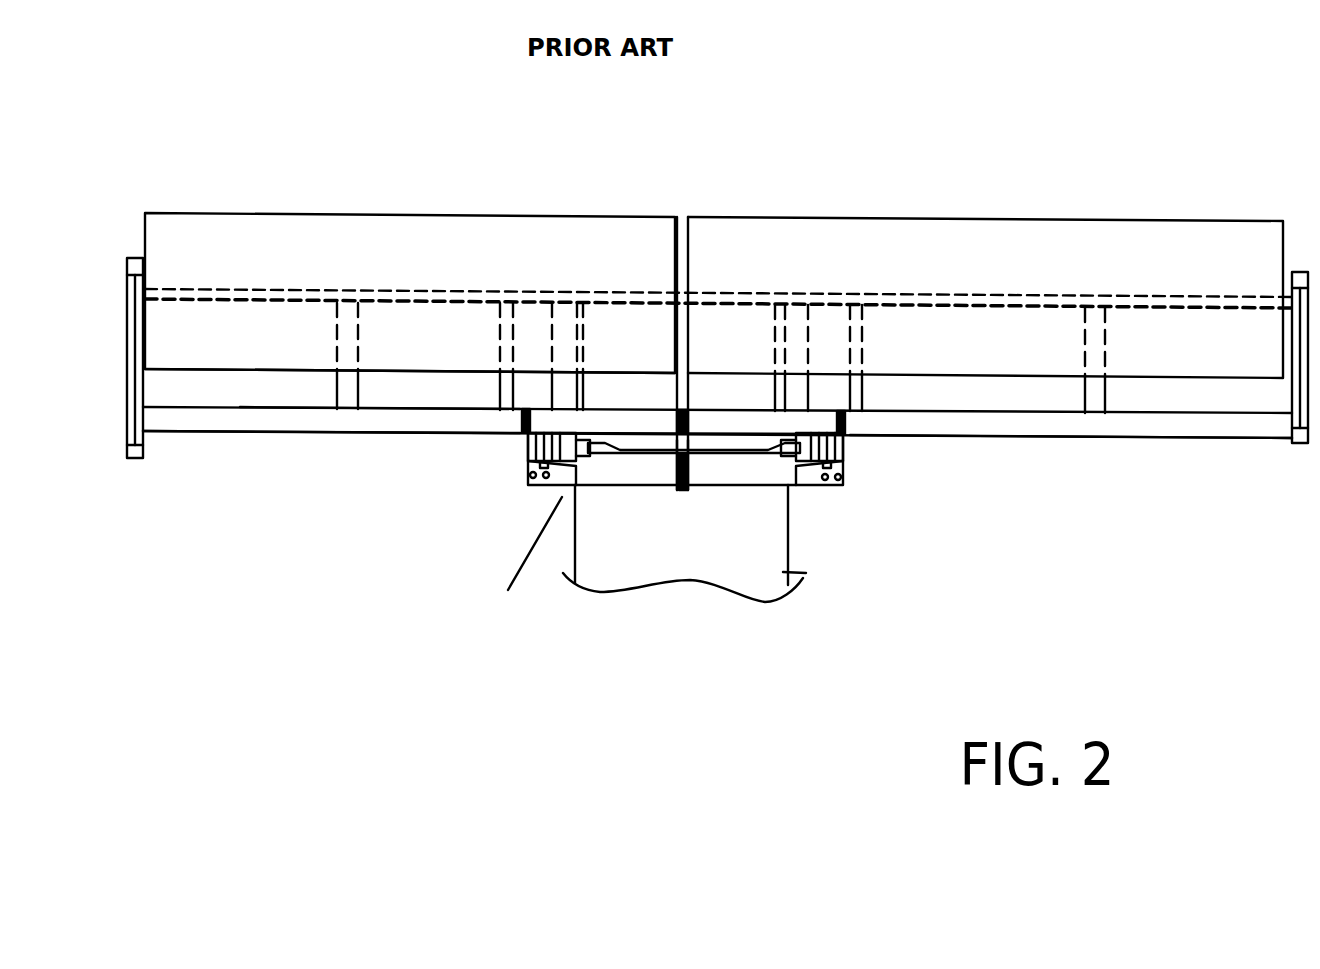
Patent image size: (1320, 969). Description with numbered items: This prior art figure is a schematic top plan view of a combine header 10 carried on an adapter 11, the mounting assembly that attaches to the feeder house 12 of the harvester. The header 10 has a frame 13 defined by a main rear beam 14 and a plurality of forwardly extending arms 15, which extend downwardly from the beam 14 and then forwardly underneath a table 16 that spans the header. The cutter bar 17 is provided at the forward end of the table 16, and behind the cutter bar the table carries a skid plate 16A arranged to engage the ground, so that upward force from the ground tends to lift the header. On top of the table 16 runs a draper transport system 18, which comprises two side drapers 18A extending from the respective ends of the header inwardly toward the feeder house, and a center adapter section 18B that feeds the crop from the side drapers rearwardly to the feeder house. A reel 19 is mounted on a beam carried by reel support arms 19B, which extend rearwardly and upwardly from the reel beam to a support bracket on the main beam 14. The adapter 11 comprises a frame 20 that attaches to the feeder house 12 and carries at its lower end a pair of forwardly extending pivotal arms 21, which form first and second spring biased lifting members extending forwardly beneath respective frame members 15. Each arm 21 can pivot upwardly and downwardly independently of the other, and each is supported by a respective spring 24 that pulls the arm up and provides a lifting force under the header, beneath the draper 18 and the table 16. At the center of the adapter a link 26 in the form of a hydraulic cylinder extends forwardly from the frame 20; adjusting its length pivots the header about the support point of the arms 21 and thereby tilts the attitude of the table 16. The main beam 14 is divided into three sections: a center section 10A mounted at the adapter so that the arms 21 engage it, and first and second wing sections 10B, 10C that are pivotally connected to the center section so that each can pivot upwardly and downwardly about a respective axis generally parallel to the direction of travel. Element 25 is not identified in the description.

The header 10 is at (868, 195).
The center section 10A is at (735, 330).
The first wing section 10B is at (273, 437).
The second wing section 10C is at (1028, 455).
The adapter 11 is at (531, 561).
The feeder house 12 is at (800, 573).
The frame 13 is at (328, 415).
The main rear beam 14 is at (400, 431).
The forwardly extending arms 15 is at (375, 328).
The table 16 is at (262, 318).
The skid plate 16A is at (470, 298).
The cutter bar 17 is at (900, 295).
The draper transport system 18 is at (1050, 285).
The side drapers 18A is at (300, 318).
The center adapter section 18B is at (643, 330).
The reel 19 is at (552, 213).
The reel support arms 19B is at (152, 342).
The frame 20 is at (727, 478).
The pivotal arms 21 is at (570, 485).
The springs 24 is at (535, 470).
The clamp 25 is at (528, 445).
The link 26 is at (673, 480).